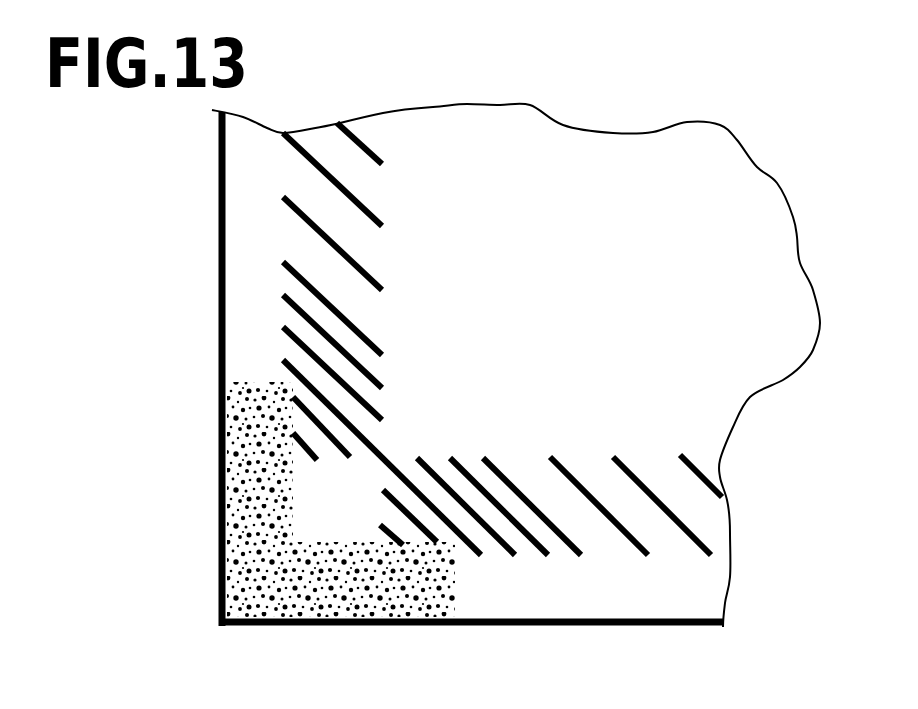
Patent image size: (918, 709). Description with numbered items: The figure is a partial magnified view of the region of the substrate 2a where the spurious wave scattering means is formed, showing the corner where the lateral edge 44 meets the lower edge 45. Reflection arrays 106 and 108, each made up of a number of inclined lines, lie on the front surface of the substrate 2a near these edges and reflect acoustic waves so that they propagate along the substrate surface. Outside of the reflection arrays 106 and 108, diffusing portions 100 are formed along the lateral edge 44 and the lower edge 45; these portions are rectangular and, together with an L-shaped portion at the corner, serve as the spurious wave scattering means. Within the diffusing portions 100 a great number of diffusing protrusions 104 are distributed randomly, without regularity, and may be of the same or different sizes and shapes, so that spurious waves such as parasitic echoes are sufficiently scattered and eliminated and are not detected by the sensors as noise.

The substrate 2a is at (606, 288).
The lateral edge 44 is at (222, 260).
The lower edge 45 is at (560, 622).
The diffusing portion 100 is at (431, 399).
The diffusing protrusion 104 is at (248, 500).
The reflection array 106 is at (377, 271).
The reflection array 108 is at (633, 461).